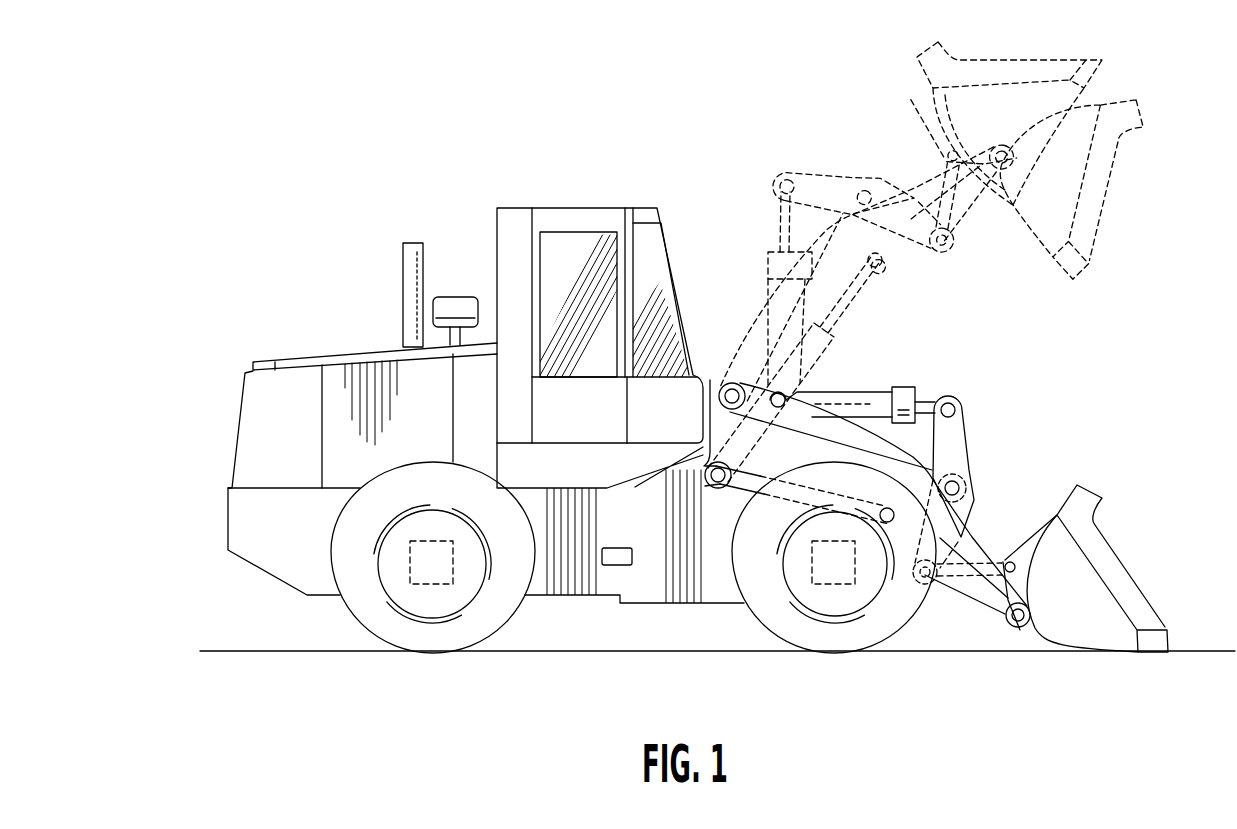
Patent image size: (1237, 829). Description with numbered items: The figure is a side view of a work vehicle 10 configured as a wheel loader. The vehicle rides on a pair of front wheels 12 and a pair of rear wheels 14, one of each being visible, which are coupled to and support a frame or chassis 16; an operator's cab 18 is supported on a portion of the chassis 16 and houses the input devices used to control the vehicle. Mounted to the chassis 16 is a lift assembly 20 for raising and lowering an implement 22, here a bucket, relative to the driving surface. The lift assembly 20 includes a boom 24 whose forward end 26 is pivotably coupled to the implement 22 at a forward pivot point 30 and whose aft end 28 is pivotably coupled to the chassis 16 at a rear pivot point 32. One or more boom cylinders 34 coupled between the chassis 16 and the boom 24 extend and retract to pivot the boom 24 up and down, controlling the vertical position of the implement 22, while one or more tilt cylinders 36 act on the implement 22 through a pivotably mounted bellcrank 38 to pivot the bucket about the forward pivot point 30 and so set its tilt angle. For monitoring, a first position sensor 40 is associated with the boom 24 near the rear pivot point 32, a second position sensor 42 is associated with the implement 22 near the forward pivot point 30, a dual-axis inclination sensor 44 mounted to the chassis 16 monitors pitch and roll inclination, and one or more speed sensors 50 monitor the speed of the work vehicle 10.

The work vehicle 10 is at (355, 138).
The front wheels 12 is at (903, 625).
The rear wheels 14 is at (360, 603).
The frame or chassis 16 is at (553, 568).
The operator's cab 18 is at (655, 265).
The lift assembly 20 is at (1000, 348).
The implement 22 is at (1138, 575).
The boom 24 is at (943, 542).
The forward end 26 is at (995, 602).
The aft end 28 is at (722, 386).
The forward pivot point 30 is at (1021, 628).
The rear pivot point 32 is at (750, 380).
The boom cylinders 34 is at (734, 511).
The tilt cylinders 36 is at (860, 378).
The bellcrank 38 is at (958, 437).
The first position sensor 40 is at (703, 404).
The second position sensor 42 is at (1030, 588).
The dual-axis inclination sensor 44 is at (617, 566).
The speed sensors 50 is at (440, 584).